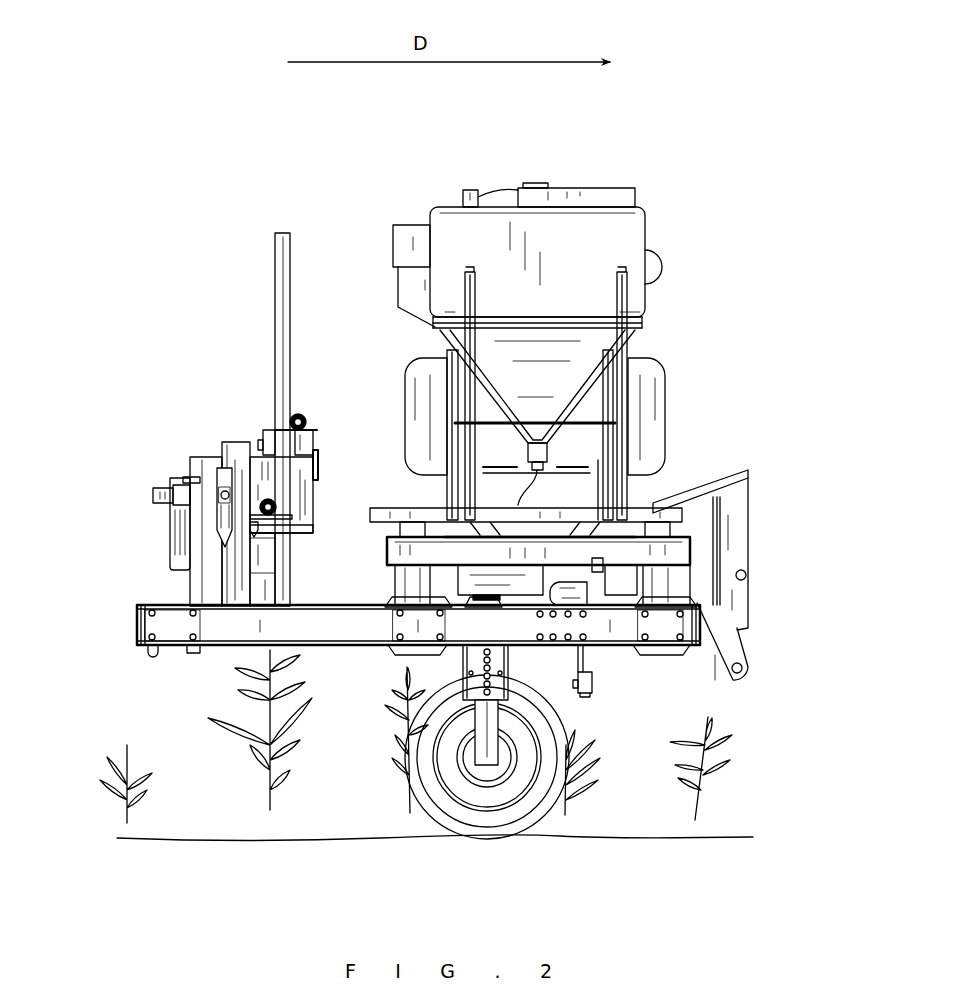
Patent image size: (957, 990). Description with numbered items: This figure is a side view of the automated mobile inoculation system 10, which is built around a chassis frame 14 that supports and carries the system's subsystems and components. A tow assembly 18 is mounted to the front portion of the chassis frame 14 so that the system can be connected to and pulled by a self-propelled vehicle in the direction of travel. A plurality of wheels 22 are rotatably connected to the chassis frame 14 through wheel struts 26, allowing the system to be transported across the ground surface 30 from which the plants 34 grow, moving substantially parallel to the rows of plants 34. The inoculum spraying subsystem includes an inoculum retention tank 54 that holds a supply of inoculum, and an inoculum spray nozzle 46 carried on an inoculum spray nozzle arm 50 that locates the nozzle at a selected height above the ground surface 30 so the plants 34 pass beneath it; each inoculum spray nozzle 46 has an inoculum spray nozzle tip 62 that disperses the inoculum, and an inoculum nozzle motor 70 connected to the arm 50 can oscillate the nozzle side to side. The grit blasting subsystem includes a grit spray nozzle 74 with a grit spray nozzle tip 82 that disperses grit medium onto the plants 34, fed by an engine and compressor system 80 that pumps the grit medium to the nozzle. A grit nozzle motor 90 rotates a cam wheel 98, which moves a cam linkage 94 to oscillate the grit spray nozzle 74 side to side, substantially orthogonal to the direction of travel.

The automated mobile inoculation system 10 is at (220, 95).
The chassis frame 14 is at (165, 633).
The tow assembly 18 is at (723, 648).
The wheels 22 is at (512, 830).
The wheel struts 26 is at (487, 740).
The ground surface 30 is at (733, 827).
The plants 34 is at (95, 793).
The inoculum spray nozzle 46 is at (593, 683).
The inoculum spray nozzle arm 50 is at (586, 658).
The inoculum retention tank 54 is at (630, 240).
The inoculum spray nozzle tip 62 is at (587, 697).
The inoculum nozzle motor 70 is at (588, 585).
The grit spray nozzle 74 is at (220, 518).
The engine and compressor system 80 is at (410, 385).
The grit spray nozzle tip 82 is at (222, 545).
The grit nozzle motor 90 is at (268, 440).
The cam linkage 94 is at (313, 497).
The cam wheel 98 is at (307, 443).